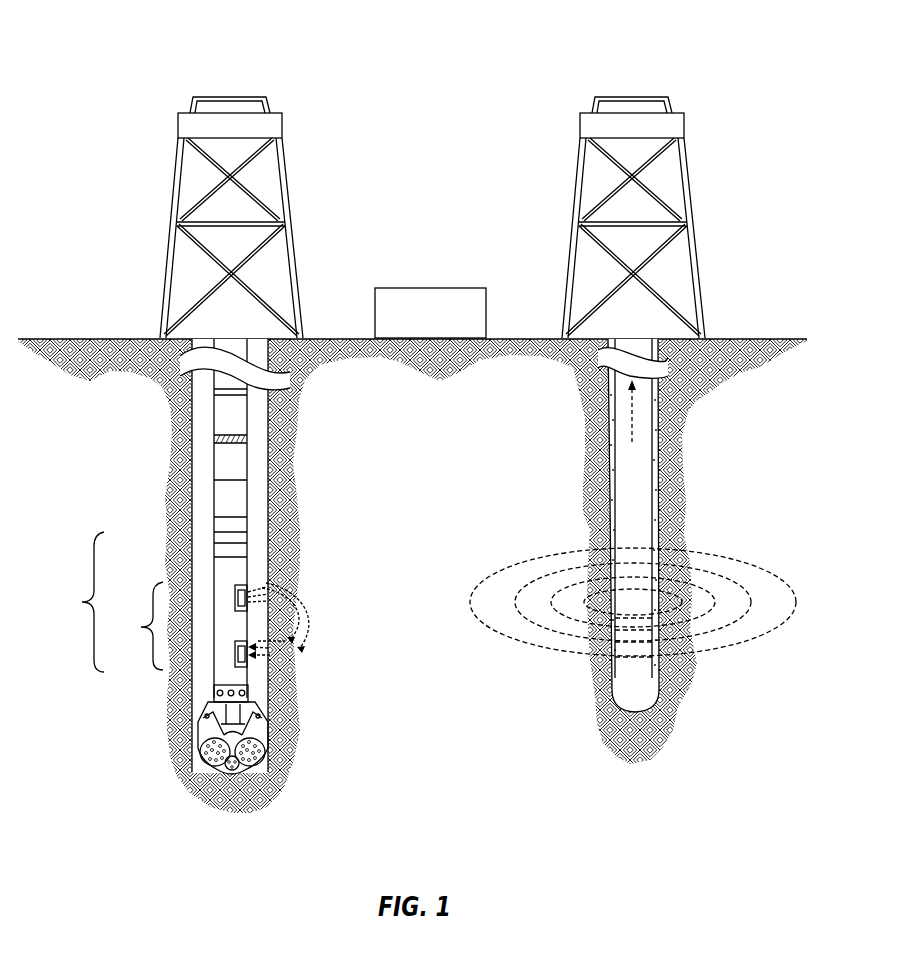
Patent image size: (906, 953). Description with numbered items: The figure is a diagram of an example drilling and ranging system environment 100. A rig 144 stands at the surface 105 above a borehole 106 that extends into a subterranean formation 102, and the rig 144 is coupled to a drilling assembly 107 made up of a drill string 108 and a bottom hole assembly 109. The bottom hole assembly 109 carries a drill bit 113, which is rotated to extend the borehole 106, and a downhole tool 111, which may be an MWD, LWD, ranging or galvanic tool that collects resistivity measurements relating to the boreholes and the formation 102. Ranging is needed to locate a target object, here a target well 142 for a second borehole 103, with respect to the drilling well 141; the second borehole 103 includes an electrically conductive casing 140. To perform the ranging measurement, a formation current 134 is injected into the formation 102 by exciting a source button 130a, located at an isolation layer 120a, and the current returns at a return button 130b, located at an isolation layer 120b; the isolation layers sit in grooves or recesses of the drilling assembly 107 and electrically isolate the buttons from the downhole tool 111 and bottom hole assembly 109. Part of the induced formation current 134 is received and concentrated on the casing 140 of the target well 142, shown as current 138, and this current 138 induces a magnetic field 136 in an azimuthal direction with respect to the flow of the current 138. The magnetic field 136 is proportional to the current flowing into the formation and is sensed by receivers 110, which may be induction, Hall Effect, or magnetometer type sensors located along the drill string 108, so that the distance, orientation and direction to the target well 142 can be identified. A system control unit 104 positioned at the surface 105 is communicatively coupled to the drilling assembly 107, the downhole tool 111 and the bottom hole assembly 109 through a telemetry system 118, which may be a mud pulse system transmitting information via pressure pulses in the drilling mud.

The drilling and ranging system environment 100 is at (121, 43).
The subterranean formation 102 is at (435, 378).
The second borehole 103 is at (658, 522).
The system control unit 104 is at (450, 323).
The surface 105 is at (535, 338).
The borehole 106 is at (192, 423).
The drilling assembly 107 is at (147, 521).
The drill string 108 is at (214, 455).
The bottom hole assembly 109 is at (72, 602).
The receivers 110 is at (212, 689).
The downhole tool 111 is at (131, 626).
The drill bit 113 is at (198, 732).
The telemetry system 118 is at (248, 498).
The isolation layer 120a is at (247, 588).
The isolation layer 120b is at (249, 663).
The source button 130a is at (247, 597).
The return button 130b is at (249, 655).
The formation current 134 is at (303, 628).
The magnetic field 136 is at (512, 639).
The current 138 is at (634, 418).
The casing 140 is at (652, 670).
The drilling well 141 is at (283, 183).
The target well 142 is at (684, 182).
The rig 144 is at (178, 125).